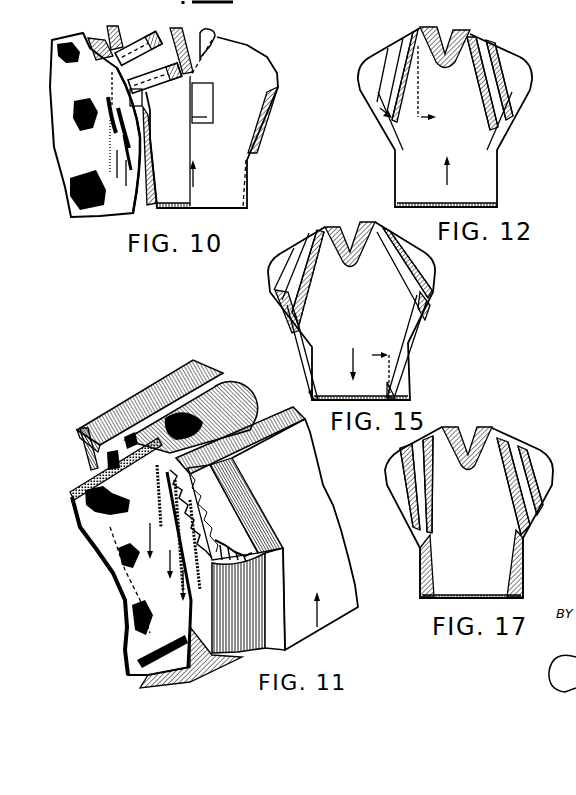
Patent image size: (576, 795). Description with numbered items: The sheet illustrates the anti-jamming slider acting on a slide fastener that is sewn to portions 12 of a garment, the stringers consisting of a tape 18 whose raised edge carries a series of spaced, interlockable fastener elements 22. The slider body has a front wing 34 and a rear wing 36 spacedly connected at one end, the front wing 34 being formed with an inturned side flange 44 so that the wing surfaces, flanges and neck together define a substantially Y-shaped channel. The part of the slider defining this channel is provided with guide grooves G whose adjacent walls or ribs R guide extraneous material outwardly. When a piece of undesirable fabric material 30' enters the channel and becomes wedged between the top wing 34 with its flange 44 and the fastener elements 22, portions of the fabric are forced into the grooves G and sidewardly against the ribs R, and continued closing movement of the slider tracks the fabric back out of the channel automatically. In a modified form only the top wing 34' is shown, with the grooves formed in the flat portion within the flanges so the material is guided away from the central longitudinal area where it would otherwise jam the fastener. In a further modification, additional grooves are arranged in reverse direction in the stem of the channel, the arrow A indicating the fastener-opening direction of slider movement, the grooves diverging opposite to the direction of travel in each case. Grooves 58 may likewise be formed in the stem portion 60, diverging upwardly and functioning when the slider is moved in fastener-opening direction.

In FIG. 11, the garment portions 12 is at (132, 610).
In FIG. 11, the tape 18 is at (90, 480).
In FIG. 10, the fastener elements 22 is at (188, 80).
In FIG. 11, the fastener elements 22 is at (220, 388).
In FIG. 10, the undesirable fabric material 30' is at (148, 68).
In FIG. 11, the undesirable fabric material 30' is at (240, 445).
In FIG. 10, the front wing 34 is at (212, 132).
In FIG. 15, the front wing 34 is at (355, 409).
In FIG. 11, the front wing 34 is at (295, 534).
In FIG. 12, the top wing 34' is at (447, 213).
In FIG. 10, the rear wing 36 is at (150, 213).
In FIG. 11, the rear wing 36 is at (133, 400).
In FIG. 10, the inturned side flange 44 is at (157, 199).
In FIG. 11, the inturned side flange 44 is at (237, 517).
In FIG. 17, the grooves 58 is at (430, 593).
In FIG. 17, the stem portion 60 is at (448, 602).
In FIG. 12, the direction arrow A is at (418, 87).
In FIG. 15, the direction arrow A is at (408, 355).
In FIG. 10, the grooves G is at (137, 116).
In FIG. 12, the grooves G is at (388, 49).
In FIG. 15, the grooves G is at (297, 252).
In FIG. 17, the grooves G is at (520, 516).
In FIG. 11, the grooves G is at (226, 527).
In FIG. 10, the ribs R is at (113, 70).
In FIG. 12, the ribs R is at (405, 43).
In FIG. 15, the ribs R is at (313, 235).
In FIG. 17, the ribs R is at (417, 448).
In FIG. 11, the ribs R is at (194, 513).